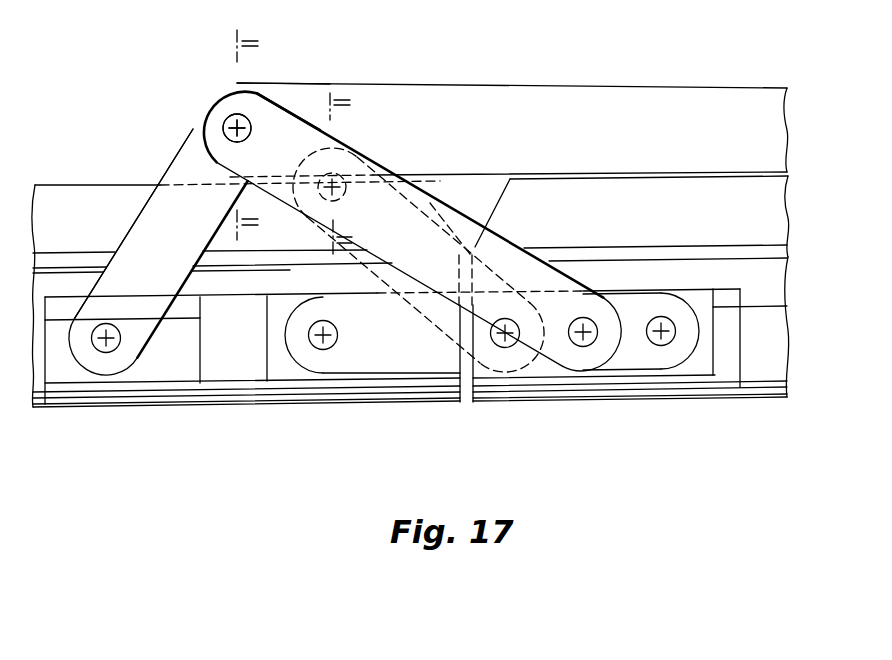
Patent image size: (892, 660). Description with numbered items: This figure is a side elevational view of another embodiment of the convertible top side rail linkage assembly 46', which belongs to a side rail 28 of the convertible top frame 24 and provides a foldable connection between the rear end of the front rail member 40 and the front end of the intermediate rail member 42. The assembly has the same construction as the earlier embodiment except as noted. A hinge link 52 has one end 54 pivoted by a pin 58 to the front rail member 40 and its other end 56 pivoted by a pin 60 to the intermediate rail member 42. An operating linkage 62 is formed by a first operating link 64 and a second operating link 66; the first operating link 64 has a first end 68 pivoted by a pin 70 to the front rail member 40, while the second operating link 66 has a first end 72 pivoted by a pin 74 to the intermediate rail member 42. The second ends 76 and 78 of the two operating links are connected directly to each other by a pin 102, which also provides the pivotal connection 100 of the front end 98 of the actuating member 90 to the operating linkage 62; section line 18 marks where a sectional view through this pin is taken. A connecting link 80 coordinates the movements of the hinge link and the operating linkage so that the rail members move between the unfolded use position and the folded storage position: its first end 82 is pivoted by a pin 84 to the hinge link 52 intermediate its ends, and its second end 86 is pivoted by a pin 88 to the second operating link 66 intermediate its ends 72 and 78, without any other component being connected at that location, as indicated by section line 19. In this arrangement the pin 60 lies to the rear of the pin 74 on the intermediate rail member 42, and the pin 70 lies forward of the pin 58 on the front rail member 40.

The section line 18 is at (233, 45).
The section line 19 is at (330, 105).
The convertible top frame 24 is at (444, 47).
The side rail 28 is at (35, 408).
The front rail member 40 is at (57, 183).
The intermediate rail member 42 is at (753, 190).
The linkage assembly 46' is at (134, 215).
The hinge link 52 is at (434, 355).
The end of hinge link 54 is at (330, 367).
The other end of hinge link 56 is at (658, 362).
The pin 58 is at (315, 350).
The pin 60 is at (665, 340).
The operating linkage 62 is at (272, 96).
The first operating link 64 is at (149, 232).
The second operating link 66 is at (400, 190).
The first end of first operating link 68 is at (130, 357).
The pin 70 is at (108, 352).
The first end of second operating link 72 is at (567, 353).
The pin 74 is at (587, 347).
The second end of first operating link 76 is at (181, 148).
The second end of second operating link 78 is at (298, 90).
The connecting link 80 is at (470, 195).
The first end of connecting link 82 is at (510, 362).
The pin 84 is at (500, 348).
The second end of connecting link 86 is at (332, 148).
The pin 88 is at (378, 162).
The actuating member 90 is at (481, 84).
The front end of actuating member 98 is at (302, 83).
The pivotal connection 100 is at (227, 117).
The pin 102 is at (226, 123).